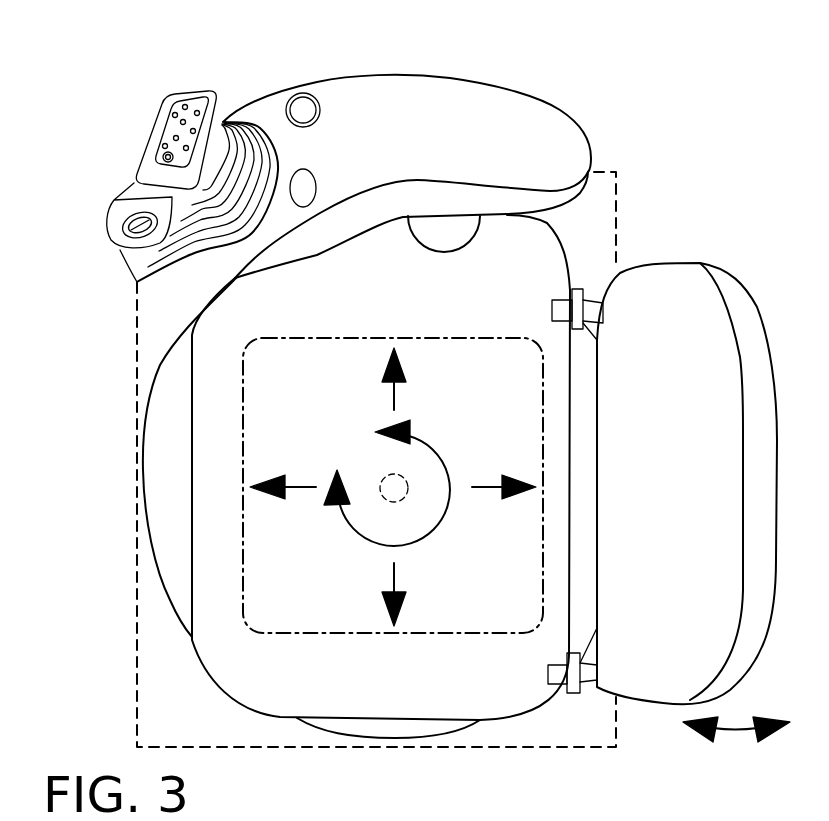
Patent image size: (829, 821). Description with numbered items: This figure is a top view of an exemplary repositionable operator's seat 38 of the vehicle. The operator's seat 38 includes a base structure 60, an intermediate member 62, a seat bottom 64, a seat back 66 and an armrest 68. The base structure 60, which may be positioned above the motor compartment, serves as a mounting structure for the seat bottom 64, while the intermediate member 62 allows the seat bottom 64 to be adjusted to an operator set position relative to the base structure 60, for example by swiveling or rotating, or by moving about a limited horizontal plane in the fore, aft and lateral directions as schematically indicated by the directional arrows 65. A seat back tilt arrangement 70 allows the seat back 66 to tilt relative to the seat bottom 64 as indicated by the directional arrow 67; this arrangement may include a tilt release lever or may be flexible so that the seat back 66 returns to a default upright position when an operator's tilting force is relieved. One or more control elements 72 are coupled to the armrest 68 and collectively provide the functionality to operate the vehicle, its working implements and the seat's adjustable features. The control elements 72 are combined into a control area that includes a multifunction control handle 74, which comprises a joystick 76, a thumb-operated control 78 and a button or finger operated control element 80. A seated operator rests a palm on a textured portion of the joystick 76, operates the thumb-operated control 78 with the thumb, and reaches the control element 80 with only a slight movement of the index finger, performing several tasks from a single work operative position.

The operator's seat 38 is at (685, 103).
The base structure 60 is at (137, 380).
The intermediate member 62 is at (167, 553).
The seat bottom 64 is at (258, 684).
The directional arrows 65 is at (495, 452).
The seat back 66 is at (680, 292).
The directional arrow 67 is at (738, 730).
The armrest 68 is at (530, 126).
The seat back tilt arrangement 70 is at (578, 302).
The control elements 72 is at (206, 55).
The multifunction control handle 74 is at (122, 126).
The joystick 76 is at (194, 100).
The thumb-operated control 78 is at (126, 240).
The button or finger operated control element 80 is at (108, 210).